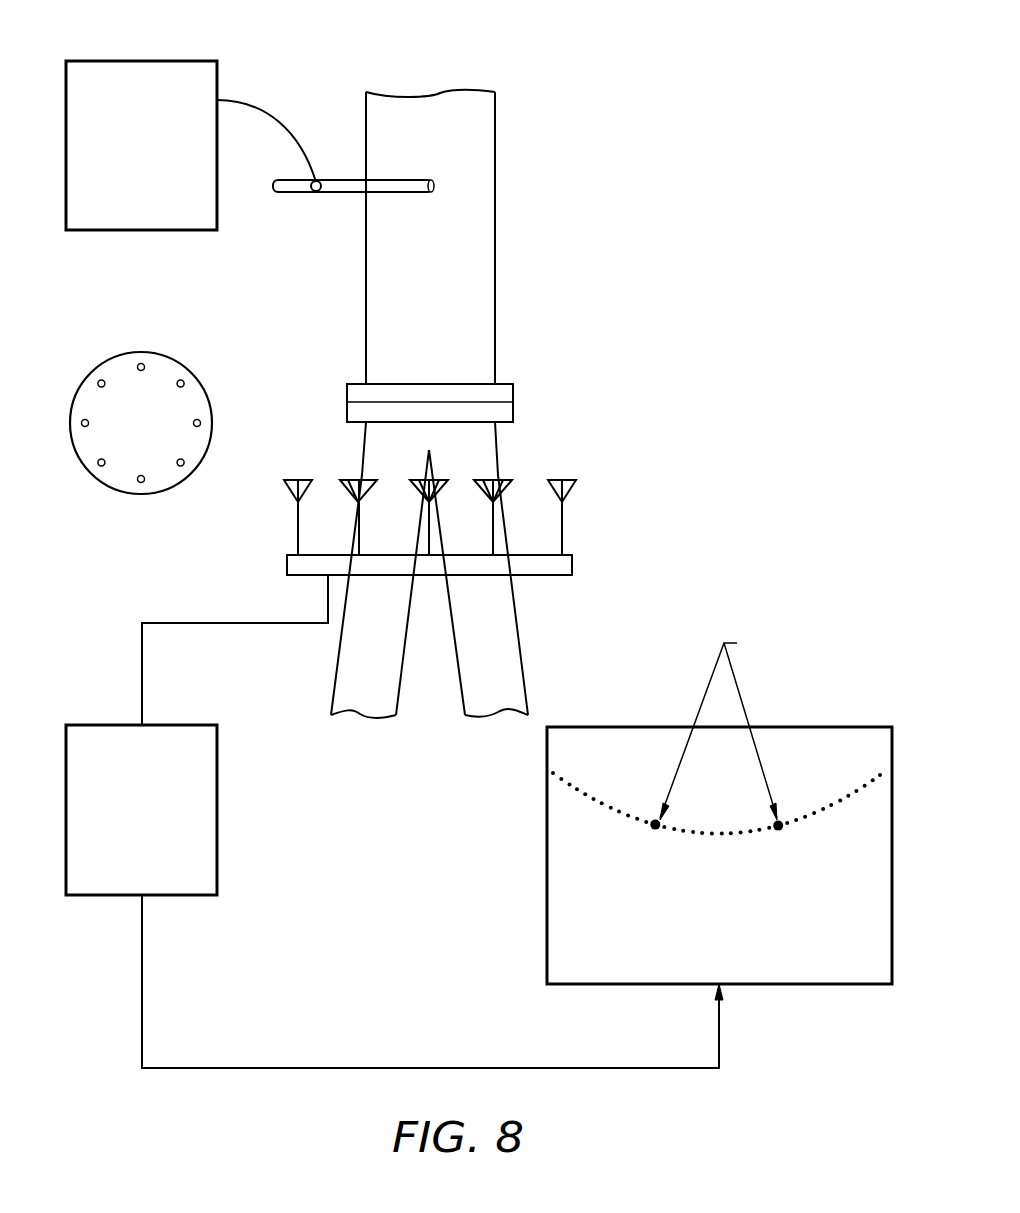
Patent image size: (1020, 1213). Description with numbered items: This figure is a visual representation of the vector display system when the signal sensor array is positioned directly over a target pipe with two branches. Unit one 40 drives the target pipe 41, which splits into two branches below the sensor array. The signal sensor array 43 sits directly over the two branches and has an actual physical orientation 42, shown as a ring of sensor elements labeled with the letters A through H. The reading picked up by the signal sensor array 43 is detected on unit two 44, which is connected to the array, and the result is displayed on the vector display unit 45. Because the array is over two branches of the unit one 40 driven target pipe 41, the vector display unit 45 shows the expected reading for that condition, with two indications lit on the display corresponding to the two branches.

The unit one 40 is at (175, 61).
The target pipe 41 is at (495, 218).
The actual physical orientation 42 is at (168, 355).
The signal sensor array 43 is at (572, 565).
The unit two 44 is at (93, 725).
The vector display unit 45 is at (792, 727).